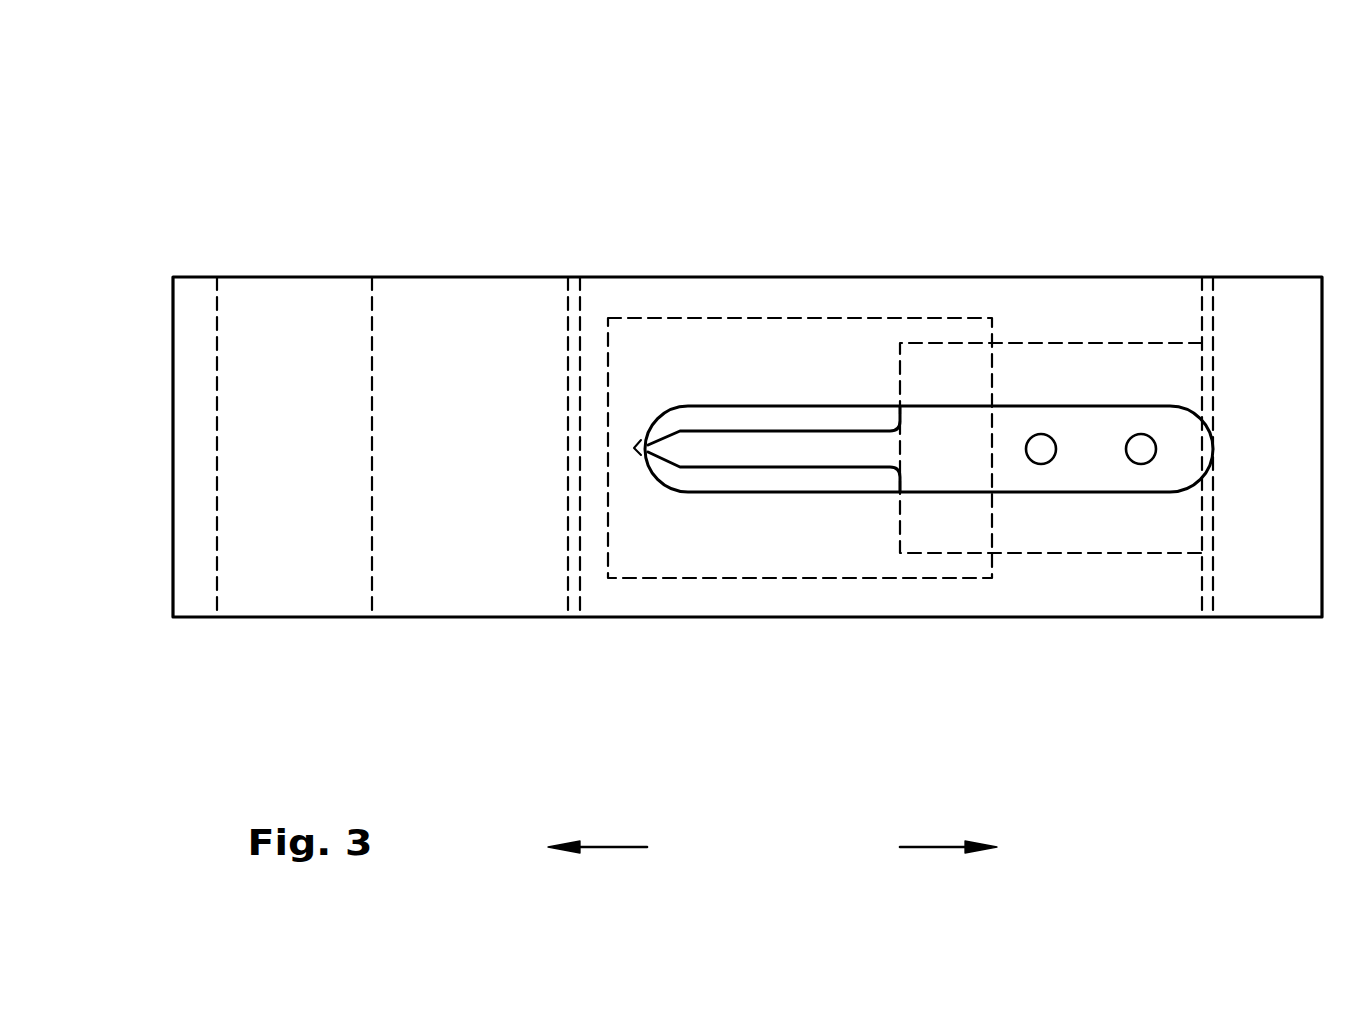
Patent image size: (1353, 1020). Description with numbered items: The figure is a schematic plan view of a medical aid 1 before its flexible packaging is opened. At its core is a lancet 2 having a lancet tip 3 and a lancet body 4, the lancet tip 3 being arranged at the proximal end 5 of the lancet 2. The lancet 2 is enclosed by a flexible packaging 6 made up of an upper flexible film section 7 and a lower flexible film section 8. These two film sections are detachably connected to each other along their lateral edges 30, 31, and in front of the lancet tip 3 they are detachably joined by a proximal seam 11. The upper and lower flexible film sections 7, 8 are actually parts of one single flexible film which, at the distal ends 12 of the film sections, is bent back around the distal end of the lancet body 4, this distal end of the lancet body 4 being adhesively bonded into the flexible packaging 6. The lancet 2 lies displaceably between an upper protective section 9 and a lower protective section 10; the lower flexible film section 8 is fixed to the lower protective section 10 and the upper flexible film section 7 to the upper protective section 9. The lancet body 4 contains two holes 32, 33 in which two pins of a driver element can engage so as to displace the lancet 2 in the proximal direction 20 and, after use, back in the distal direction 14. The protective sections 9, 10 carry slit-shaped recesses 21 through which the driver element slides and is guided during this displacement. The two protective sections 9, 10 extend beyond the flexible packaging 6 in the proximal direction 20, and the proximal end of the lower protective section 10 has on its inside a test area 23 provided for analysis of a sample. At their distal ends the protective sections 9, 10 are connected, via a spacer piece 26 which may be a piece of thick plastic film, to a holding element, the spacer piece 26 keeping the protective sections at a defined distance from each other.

The medical aid 1 is at (706, 148).
The lancet 2 is at (773, 447).
The lancet tip 3 is at (644, 447).
The lancet body 4 is at (950, 452).
The proximal end 5 is at (649, 323).
The flexible packaging 6 is at (790, 591).
The upper flexible film section 7 is at (762, 540).
The lower flexible film section 8 is at (790, 591).
The upper protective section 9 is at (470, 404).
The lower protective section 10 is at (467, 350).
The proximal seam 11 is at (595, 477).
The distal ends of the flexible film sections 12 is at (1202, 580).
The distal direction 14 is at (940, 847).
The proximal direction 20 is at (596, 847).
The slit-shaped recesses 21 is at (835, 418).
The test area 23 is at (273, 580).
The spacer piece 26 is at (1258, 300).
The lateral edge 30 is at (748, 300).
The lateral edge 31 is at (663, 593).
The hole 32 is at (1041, 452).
The hole 33 is at (1140, 452).